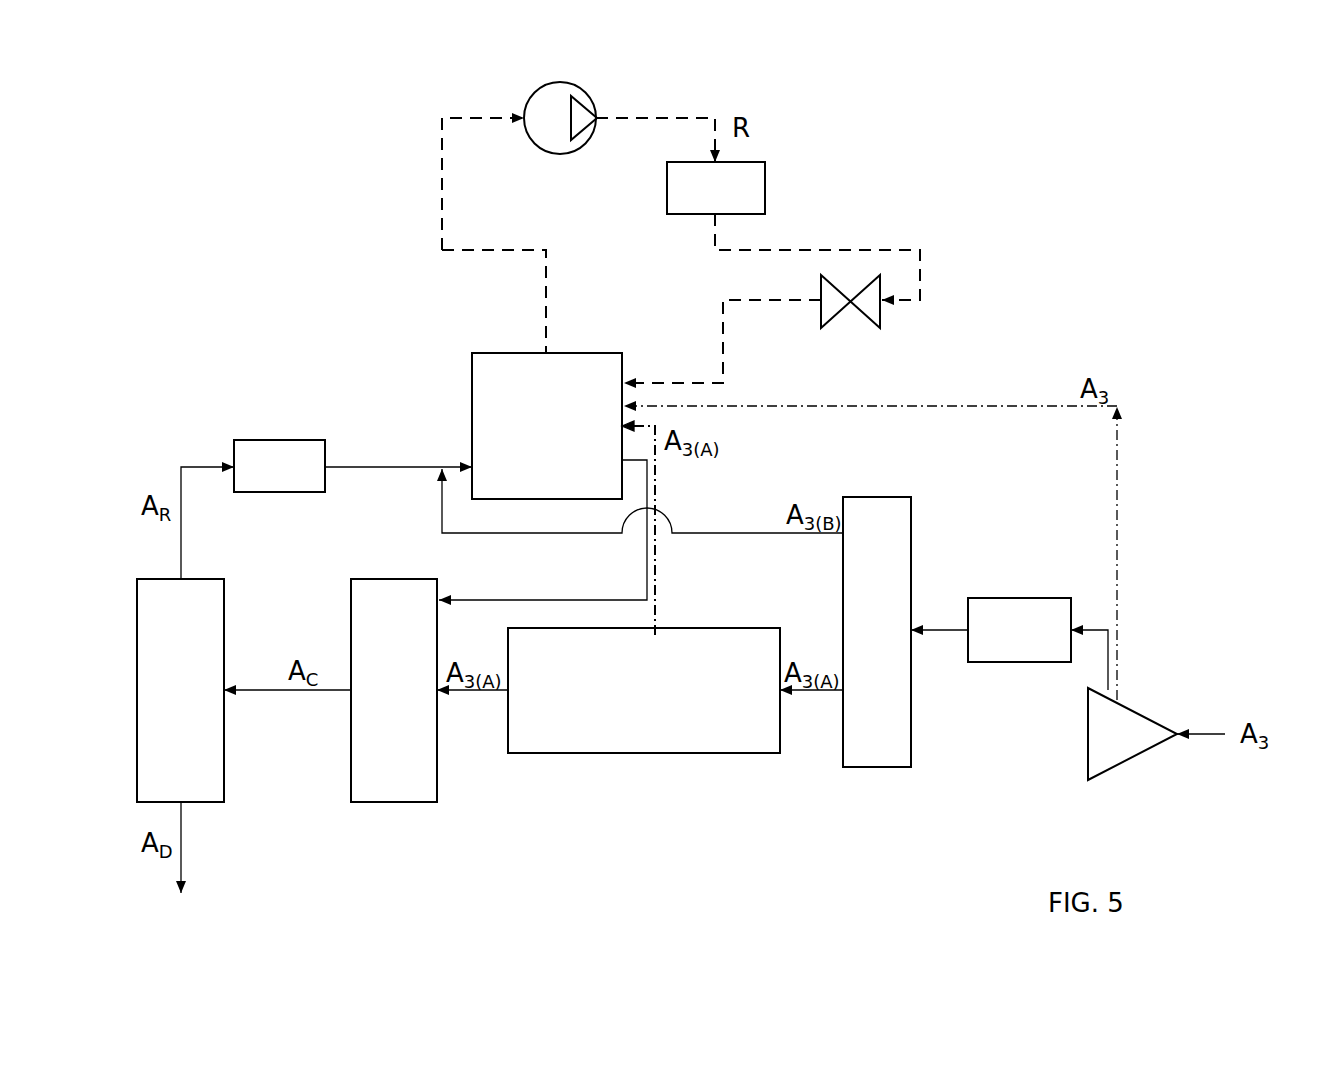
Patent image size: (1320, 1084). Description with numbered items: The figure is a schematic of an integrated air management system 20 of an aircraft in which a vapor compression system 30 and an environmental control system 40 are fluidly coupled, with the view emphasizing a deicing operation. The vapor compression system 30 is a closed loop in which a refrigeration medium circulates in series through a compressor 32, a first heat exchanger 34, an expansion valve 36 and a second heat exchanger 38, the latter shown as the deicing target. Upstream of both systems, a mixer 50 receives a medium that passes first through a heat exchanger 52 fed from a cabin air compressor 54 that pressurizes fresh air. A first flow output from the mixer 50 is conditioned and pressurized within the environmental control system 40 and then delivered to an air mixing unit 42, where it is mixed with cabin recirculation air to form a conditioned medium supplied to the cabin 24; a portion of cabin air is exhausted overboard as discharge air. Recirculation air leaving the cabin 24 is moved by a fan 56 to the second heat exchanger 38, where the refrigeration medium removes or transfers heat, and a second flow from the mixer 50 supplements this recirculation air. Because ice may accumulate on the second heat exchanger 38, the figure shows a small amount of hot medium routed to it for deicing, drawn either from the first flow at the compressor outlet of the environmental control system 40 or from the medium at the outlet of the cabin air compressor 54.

The air management system 20 is at (1084, 208).
The cabin 24 is at (180, 690).
The vapor compression system 30 is at (875, 187).
The compressor 32 is at (558, 120).
The first heat exchanger 34 is at (716, 188).
The expansion valve 36 is at (873, 302).
The second heat exchanger 38 is at (472, 380).
The environmental control system 40 is at (644, 690).
The air mixing unit 42 is at (394, 690).
The mixer 50 is at (877, 632).
The heat exchanger 52 is at (1019, 630).
The compressor 54 is at (1132, 734).
The fan 56 is at (279, 466).